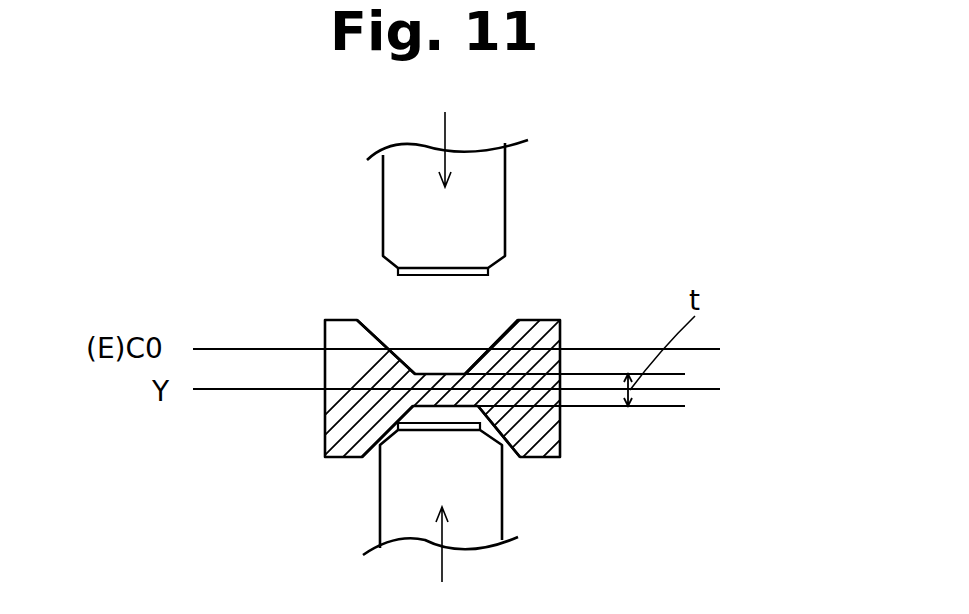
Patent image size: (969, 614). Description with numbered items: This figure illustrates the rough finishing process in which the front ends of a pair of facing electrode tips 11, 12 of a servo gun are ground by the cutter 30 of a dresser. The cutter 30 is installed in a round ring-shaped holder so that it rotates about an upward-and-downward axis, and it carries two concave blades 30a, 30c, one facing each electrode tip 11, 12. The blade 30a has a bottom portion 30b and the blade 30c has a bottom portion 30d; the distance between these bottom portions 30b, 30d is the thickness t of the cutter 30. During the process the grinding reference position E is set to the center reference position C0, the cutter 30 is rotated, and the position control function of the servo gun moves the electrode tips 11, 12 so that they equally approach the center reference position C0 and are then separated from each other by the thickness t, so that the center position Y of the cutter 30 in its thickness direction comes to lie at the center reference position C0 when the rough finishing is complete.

The electrode tip 11 is at (488, 214).
The electrode tip 12 is at (490, 528).
The cutter 30 is at (325, 318).
The concave blade 30a is at (383, 335).
The bottom portion of blade 30b is at (457, 372).
The concave blade 30c is at (365, 457).
The bottom portion of blade 30d is at (445, 405).